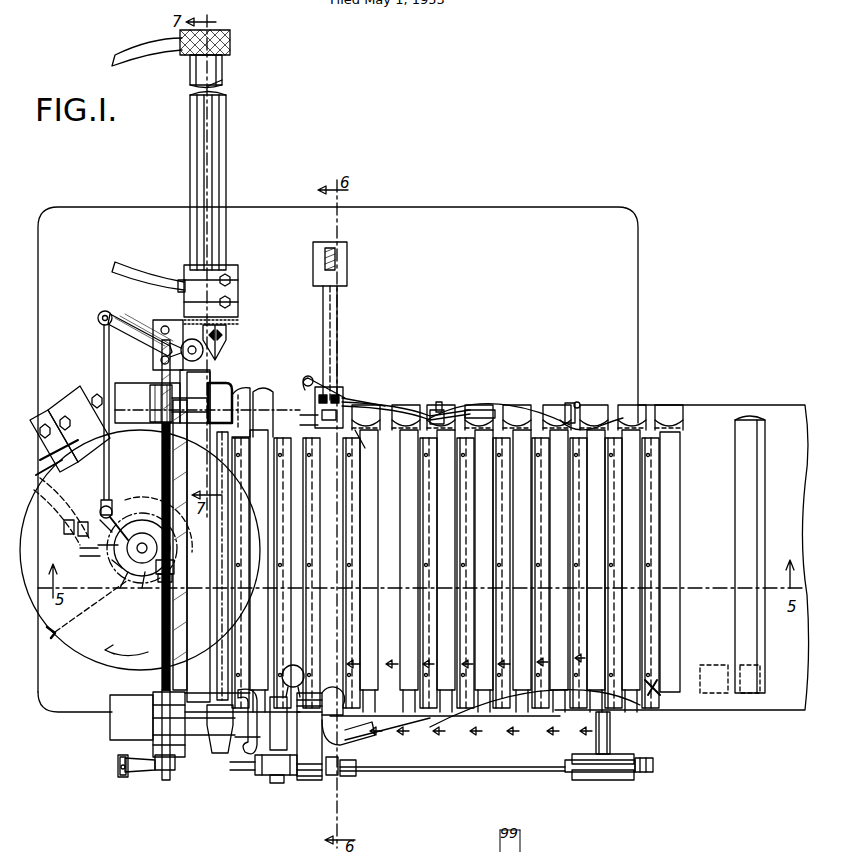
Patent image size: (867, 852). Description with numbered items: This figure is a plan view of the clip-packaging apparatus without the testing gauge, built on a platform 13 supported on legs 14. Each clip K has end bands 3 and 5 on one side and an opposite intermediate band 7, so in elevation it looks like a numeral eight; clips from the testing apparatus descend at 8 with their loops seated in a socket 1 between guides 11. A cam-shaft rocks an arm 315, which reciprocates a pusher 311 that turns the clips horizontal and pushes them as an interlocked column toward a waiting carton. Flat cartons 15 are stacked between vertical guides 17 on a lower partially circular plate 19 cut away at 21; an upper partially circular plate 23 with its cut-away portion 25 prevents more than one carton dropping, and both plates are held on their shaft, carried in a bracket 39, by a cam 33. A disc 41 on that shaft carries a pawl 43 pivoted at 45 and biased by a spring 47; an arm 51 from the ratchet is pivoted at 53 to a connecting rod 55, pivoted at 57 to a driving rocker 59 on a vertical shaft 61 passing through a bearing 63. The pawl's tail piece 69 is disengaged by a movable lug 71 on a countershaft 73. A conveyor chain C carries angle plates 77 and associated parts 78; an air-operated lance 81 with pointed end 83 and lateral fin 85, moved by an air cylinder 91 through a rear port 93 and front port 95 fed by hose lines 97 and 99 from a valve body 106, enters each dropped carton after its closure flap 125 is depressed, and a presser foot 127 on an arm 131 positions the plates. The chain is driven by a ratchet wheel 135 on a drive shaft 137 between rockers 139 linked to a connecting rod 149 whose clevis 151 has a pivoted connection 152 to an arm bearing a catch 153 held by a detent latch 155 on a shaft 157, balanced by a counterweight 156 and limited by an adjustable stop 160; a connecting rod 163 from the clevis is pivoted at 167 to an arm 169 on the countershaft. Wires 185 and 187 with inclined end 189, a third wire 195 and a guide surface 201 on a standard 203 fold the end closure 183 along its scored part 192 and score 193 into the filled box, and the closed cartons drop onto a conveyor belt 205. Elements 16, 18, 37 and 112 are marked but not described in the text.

The socket 1 is at (318, 408).
The end band 3 is at (345, 404).
The end band 5 is at (268, 402).
The intermediate band 7 is at (257, 246).
The descent point 8 is at (363, 448).
The guides 11 is at (330, 428).
The platform 13 is at (626, 300).
The legs 14 is at (390, 590).
The cartons 15 is at (187, 678).
The slat 16 is at (492, 590).
The vertical guides 17 is at (250, 388).
The slat 18 is at (585, 590).
The lower partially circular plate 19 is at (248, 505).
The cut-away portion 21 is at (108, 622).
The upper partially circular plate 23 is at (75, 645).
The cut-away portion 25 is at (187, 618).
The cam 33 is at (160, 498).
The bracket 37 is at (54, 422).
The bracket 39 is at (78, 386).
The disc 41 is at (100, 543).
The pawl 43 is at (121, 587).
The pivot 45 is at (145, 587).
The spring 47 is at (112, 566).
The arm 51 is at (98, 523).
The pivot 53 is at (104, 513).
The connecting rod 55 is at (103, 350).
The pivot 57 is at (98, 313).
The driving rocker 59 is at (140, 330).
The vertical shaft 61 is at (160, 358).
The bearing 63 is at (185, 325).
The tail piece 69 is at (174, 563).
The movable lug 71 is at (172, 578).
The countershaft 73 is at (161, 645).
The angle plates 77 is at (682, 573).
The part 78 is at (620, 512).
The air-operated lance 81 is at (228, 328).
The pointed end 83 is at (230, 392).
The lateral fin 85 is at (226, 345).
The air cylinder 91 is at (226, 163).
The rear port 93 is at (189, 57).
The front port 95 is at (190, 270).
The hose line 97 is at (150, 42).
The hose line 99 is at (160, 276).
The valve body 106 is at (59, 511).
The lever 112 is at (79, 555).
The closure flap 125 is at (748, 420).
The presser foot 127 is at (262, 752).
The arm 131 is at (142, 531).
The ratchet wheel 135 is at (653, 768).
The drive shaft 137 is at (612, 782).
The rockers 139 is at (582, 752).
The connecting rod 149 is at (550, 772).
The clevis 151 is at (275, 775).
The pivoted connection 152 is at (285, 783).
The catch 153 is at (250, 775).
The detent latch 155 is at (318, 780).
The counterweight 156 is at (292, 664).
The shaft 157 is at (320, 690).
The adjustable stop 160 is at (338, 780).
The connecting rod 163 is at (185, 765).
The pivot 167 is at (123, 778).
The arm 169 is at (145, 762).
The end closure 183 is at (350, 745).
The first wire 185 is at (350, 400).
The wire 187 is at (380, 410).
The inclined end 189 is at (437, 408).
The scored part 192 is at (533, 562).
The score 193 is at (376, 740).
The third wire 195 is at (456, 568).
The guide surface 201 is at (478, 408).
The standard 203 is at (625, 718).
The conveyor belt 205 is at (722, 718).
The pusher 311 is at (328, 368).
The arm 315 is at (326, 258).
The conveyor chain C is at (660, 695).
The clip K is at (293, 455).